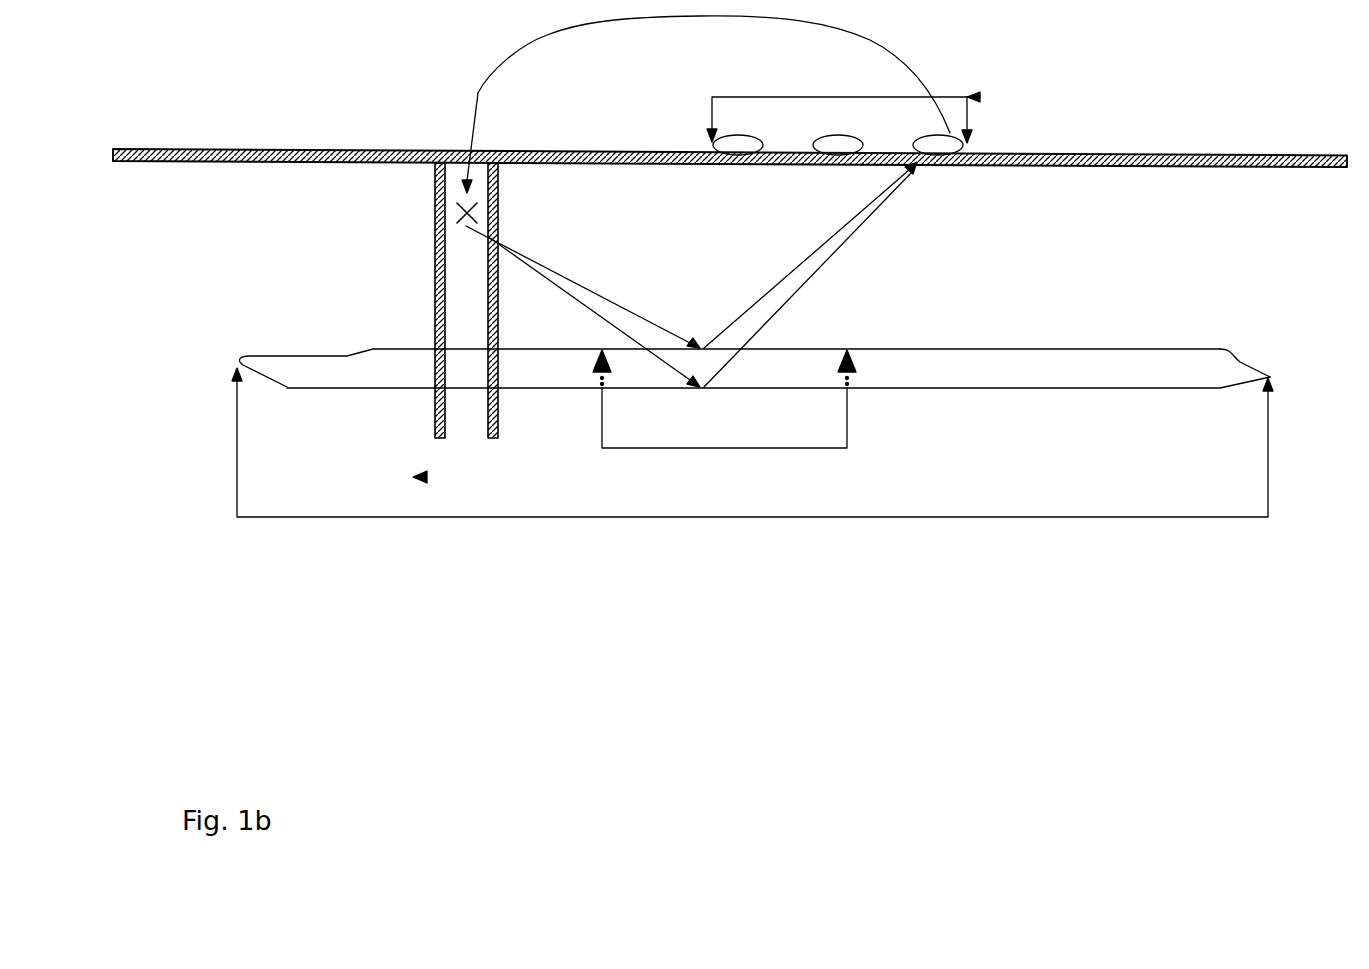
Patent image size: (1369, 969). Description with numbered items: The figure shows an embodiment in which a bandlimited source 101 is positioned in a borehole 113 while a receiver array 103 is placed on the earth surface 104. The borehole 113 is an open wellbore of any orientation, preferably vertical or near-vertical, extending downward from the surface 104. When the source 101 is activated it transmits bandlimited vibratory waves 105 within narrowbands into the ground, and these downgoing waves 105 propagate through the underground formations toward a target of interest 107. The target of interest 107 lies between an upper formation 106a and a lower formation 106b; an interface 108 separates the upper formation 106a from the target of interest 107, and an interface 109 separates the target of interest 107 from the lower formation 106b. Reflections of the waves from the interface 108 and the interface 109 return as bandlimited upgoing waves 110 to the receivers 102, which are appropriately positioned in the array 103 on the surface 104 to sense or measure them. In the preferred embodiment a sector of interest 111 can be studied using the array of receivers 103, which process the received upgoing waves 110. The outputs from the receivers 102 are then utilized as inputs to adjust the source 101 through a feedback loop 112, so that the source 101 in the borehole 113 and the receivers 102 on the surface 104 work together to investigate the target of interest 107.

The bandlimited source 101 is at (444, 205).
The receivers 102 is at (975, 144).
The receiver array 103 is at (843, 100).
The earth surface 104 is at (730, 139).
The bandlimited vibratory waves 105 is at (583, 306).
The upper formation 106a is at (1093, 266).
The lower formation 106b is at (1120, 621).
The target of interest 107 is at (752, 459).
The interface 108 is at (754, 347).
The interface 109 is at (778, 372).
The bandlimited upgoing waves 110 is at (810, 274).
The sector of interest 111 is at (724, 415).
The feedback loop 112 is at (534, 36).
The borehole 113 is at (434, 265).